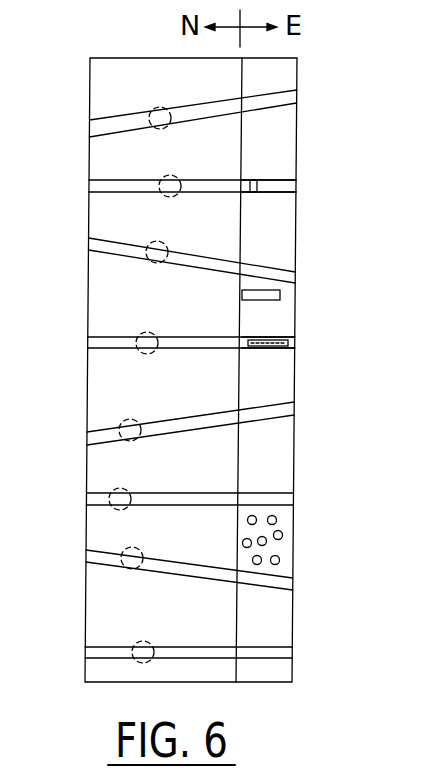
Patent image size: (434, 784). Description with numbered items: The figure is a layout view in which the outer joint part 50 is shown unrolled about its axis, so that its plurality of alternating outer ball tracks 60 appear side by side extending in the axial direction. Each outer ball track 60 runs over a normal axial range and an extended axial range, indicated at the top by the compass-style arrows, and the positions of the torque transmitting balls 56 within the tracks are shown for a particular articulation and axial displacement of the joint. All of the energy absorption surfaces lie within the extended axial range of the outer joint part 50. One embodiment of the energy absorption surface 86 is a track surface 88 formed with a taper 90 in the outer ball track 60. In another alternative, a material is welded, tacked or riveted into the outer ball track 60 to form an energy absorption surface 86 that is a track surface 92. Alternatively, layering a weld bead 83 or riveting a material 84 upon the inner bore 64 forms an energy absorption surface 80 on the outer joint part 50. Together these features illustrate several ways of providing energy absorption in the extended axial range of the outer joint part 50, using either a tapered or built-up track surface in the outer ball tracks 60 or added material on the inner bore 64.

The outer joint part 50 is at (134, 48).
The torque transmitting balls 56 is at (158, 108).
The outer ball tracks 60 is at (108, 125).
The inner bore 64 is at (210, 283).
The energy absorption surface 80 is at (311, 291).
The weld bead 83 is at (280, 287).
The riveted material 84 is at (277, 519).
The energy absorption surface 86 is at (315, 178).
The track surface 88 is at (257, 192).
The taper 90 is at (263, 182).
The track surface 92 is at (280, 340).